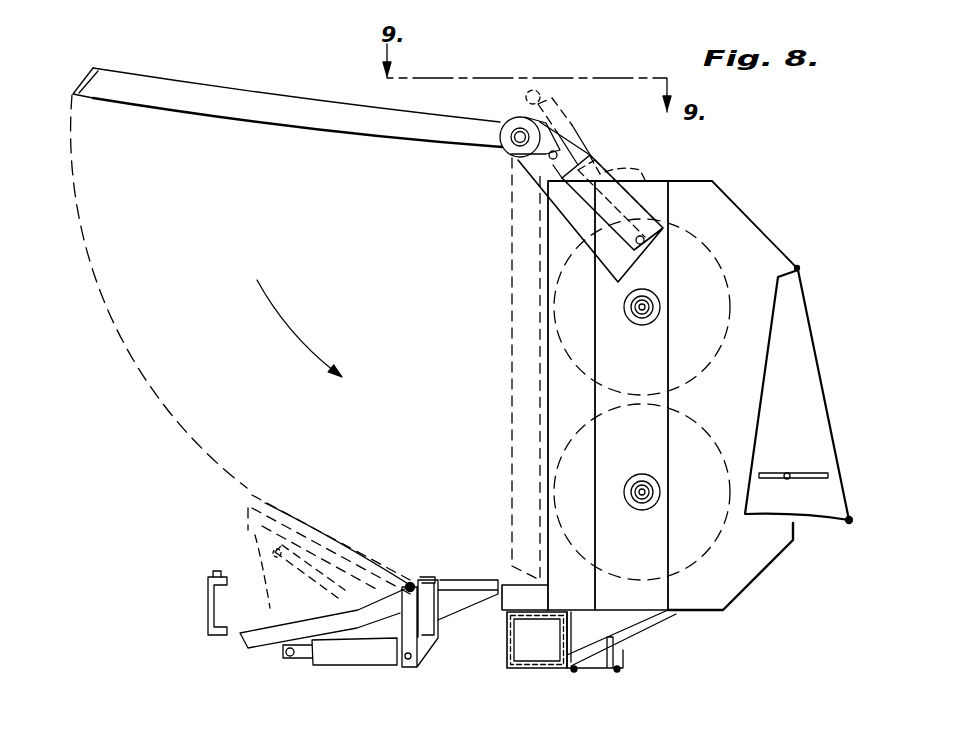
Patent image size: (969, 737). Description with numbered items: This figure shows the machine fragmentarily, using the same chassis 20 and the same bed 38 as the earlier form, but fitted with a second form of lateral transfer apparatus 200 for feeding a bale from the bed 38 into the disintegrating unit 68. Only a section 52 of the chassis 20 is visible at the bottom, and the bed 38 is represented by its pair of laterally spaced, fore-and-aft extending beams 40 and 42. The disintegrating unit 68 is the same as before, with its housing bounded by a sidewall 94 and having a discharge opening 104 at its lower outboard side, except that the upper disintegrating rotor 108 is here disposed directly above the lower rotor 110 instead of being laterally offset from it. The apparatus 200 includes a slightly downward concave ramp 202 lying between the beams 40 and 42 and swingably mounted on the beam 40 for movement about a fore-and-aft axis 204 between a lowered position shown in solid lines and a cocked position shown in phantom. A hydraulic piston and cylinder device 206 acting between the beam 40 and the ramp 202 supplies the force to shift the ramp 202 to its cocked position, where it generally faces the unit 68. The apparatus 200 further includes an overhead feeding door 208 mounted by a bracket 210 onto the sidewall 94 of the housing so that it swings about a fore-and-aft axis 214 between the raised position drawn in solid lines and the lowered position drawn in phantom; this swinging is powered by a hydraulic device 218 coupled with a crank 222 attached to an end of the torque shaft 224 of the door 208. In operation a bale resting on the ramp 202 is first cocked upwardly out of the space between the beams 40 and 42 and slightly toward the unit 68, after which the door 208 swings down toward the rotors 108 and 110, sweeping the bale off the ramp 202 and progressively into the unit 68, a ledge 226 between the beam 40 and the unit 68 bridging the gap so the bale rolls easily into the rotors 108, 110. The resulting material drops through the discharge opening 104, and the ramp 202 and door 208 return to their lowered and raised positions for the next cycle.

The lateral transfer apparatus 200 is at (306, 306).
The overhead feeding door 208 is at (291, 116).
The fore-and-aft axis 214 is at (507, 131).
The torque shaft 224 is at (517, 117).
The crank 222 is at (547, 130).
The hydraulic device 218 is at (642, 180).
The bracket 210 is at (582, 223).
The sidewall 94 is at (713, 203).
The disintegrating unit 68 is at (677, 386).
The upper disintegrating rotor 108 is at (733, 303).
The lower disintegrating rotor 110 is at (707, 428).
The discharge opening 104 is at (776, 563).
The bed 38 is at (179, 577).
The beam 42 is at (207, 603).
The ramp 202 is at (262, 627).
The fore-and-aft axis 204 is at (412, 584).
The ledge 226 is at (478, 600).
The beam 40 is at (450, 606).
The hydraulic piston and cylinder device 206 is at (366, 655).
The chassis 20 is at (530, 678).
The section 52 is at (593, 655).